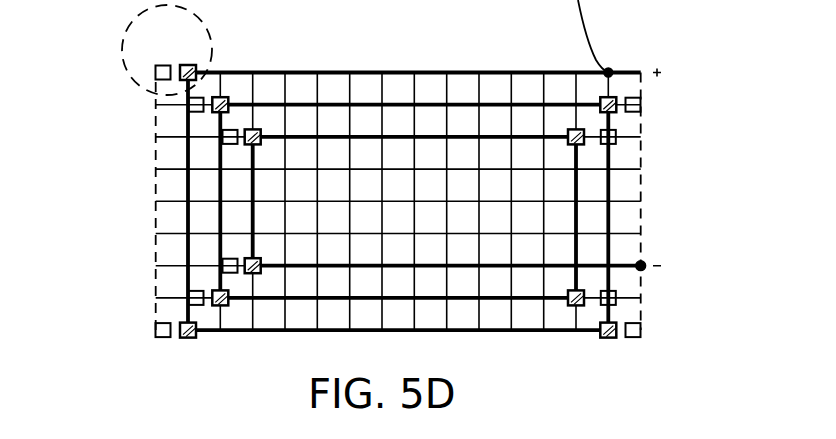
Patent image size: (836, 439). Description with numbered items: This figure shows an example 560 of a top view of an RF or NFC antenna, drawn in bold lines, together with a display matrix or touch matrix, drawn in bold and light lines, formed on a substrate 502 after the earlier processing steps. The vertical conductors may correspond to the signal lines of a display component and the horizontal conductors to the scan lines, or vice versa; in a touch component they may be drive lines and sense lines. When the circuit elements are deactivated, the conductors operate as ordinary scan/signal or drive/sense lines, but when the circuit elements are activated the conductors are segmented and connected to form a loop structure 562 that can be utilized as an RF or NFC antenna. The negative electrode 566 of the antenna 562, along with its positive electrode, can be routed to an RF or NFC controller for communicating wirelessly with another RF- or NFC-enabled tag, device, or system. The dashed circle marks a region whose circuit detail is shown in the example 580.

The substrate 502 is at (348, 72).
The example top view of RF or NFC antenna and display or touch matrix 560 is at (686, 92).
The loop structure 562 is at (515, 331).
The negative electrode 566 is at (644, 272).
The example high-level circuit diagram 580 is at (134, 80).